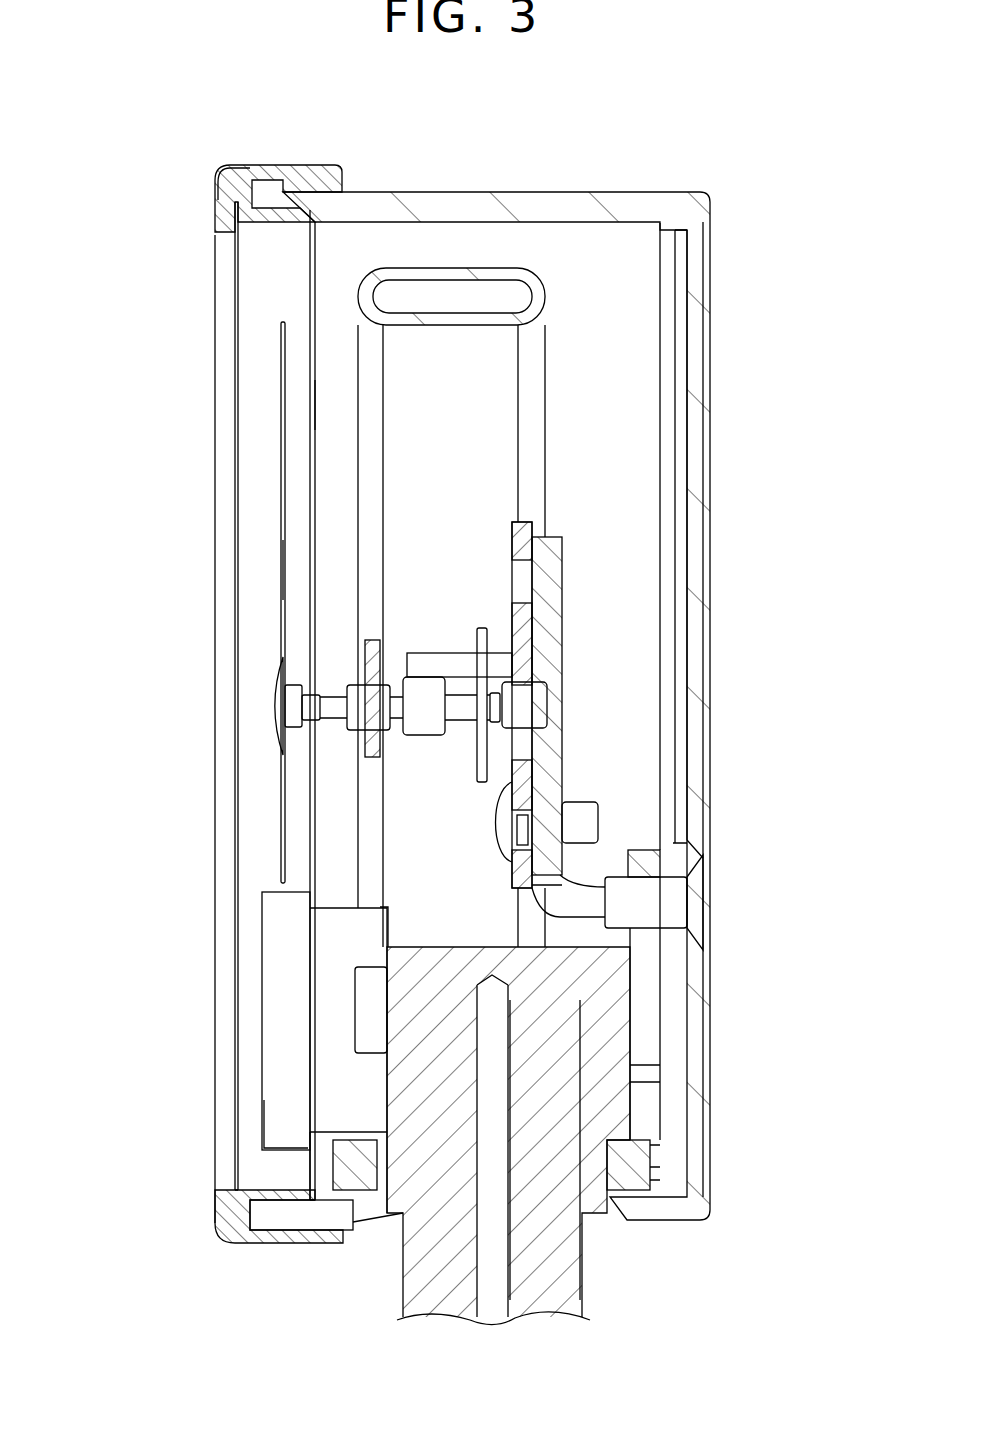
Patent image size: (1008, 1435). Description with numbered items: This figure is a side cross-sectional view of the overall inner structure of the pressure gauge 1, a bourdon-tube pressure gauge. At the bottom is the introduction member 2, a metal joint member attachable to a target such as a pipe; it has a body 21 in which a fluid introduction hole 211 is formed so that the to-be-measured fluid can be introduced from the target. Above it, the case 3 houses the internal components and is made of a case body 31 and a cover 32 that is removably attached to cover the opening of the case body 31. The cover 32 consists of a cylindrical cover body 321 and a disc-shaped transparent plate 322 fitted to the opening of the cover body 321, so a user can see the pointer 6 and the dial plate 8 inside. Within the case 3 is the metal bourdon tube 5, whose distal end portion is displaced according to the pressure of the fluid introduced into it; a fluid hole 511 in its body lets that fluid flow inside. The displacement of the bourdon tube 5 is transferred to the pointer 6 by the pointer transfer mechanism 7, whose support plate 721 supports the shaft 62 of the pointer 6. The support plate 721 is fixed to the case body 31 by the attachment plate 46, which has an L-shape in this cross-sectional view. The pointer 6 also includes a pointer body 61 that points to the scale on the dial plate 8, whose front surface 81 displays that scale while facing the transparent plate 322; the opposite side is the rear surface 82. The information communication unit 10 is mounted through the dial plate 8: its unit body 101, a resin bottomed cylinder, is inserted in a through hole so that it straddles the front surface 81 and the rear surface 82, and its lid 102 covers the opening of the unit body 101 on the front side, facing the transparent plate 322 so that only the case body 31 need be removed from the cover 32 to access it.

The pressure gauge 1 is at (802, 136).
The introduction member 2 is at (640, 1262).
The body 21 is at (585, 1285).
The fluid introduction hole 211 is at (480, 1262).
The case 3 is at (453, 92).
The case body 31 is at (370, 200).
The cover 32 is at (330, 190).
The cover body 321 is at (240, 175).
The transparent plate 322 is at (235, 275).
The bourdon tube 5 is at (525, 353).
The fluid hole 511 is at (478, 290).
The pointer 6 is at (275, 440).
The pointer body 61 is at (280, 570).
The shaft 62 is at (362, 708).
The pointer transfer mechanism 7 is at (572, 478).
The support plate 721 is at (532, 530).
The dial plate 8 is at (310, 295).
The front surface 81 is at (281, 360).
The rear surface 82 is at (318, 405).
The information communication unit 10 is at (250, 919).
The unit body 101 is at (275, 1130).
The lid 102 is at (265, 1053).
The attachment plate 46 is at (545, 625).